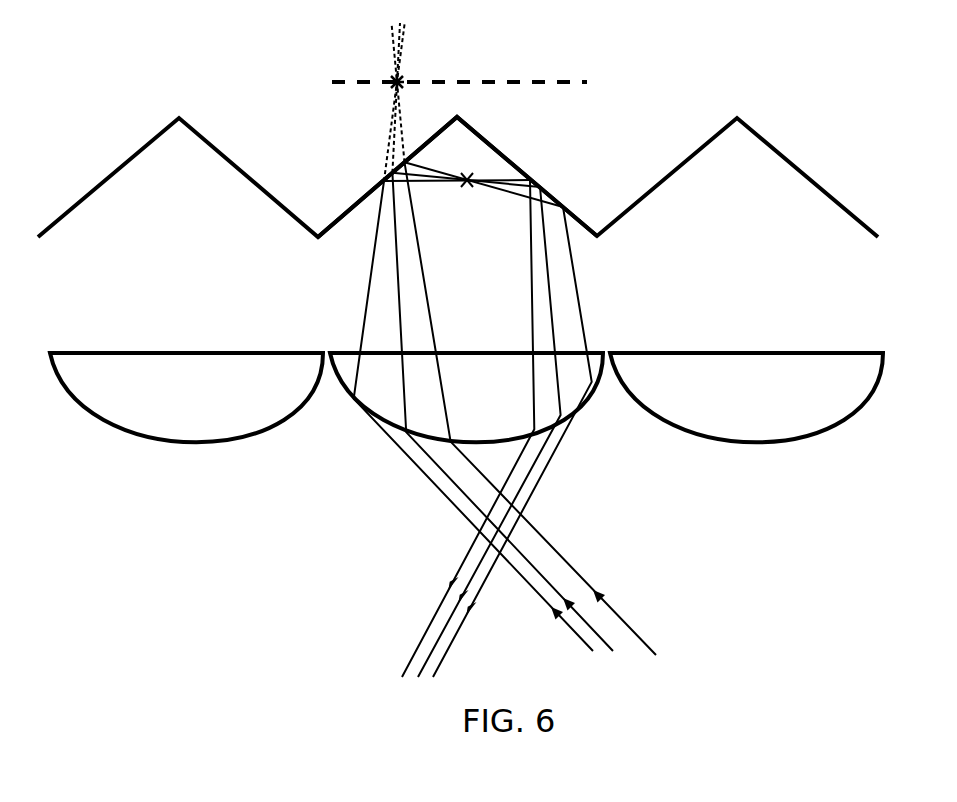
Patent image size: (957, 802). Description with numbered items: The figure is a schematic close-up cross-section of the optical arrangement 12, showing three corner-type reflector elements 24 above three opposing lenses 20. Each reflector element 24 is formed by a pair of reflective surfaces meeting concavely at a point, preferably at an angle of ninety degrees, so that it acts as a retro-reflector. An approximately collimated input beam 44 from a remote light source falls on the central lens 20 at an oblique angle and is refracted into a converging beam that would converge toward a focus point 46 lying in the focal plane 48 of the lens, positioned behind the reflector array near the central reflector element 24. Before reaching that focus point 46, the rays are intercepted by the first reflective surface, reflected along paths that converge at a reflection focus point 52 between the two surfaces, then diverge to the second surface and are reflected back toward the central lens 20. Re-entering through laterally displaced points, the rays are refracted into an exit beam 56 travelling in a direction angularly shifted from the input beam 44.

The optical arrangement 12 is at (458, 159).
The lens 20 is at (594, 352).
The reflector element 24 is at (492, 140).
The input beam 44 is at (604, 607).
The focus point 46 is at (389, 74).
The focal plane 48 is at (556, 82).
The reflection focus point 52 is at (470, 188).
The exit beam 56 is at (430, 623).